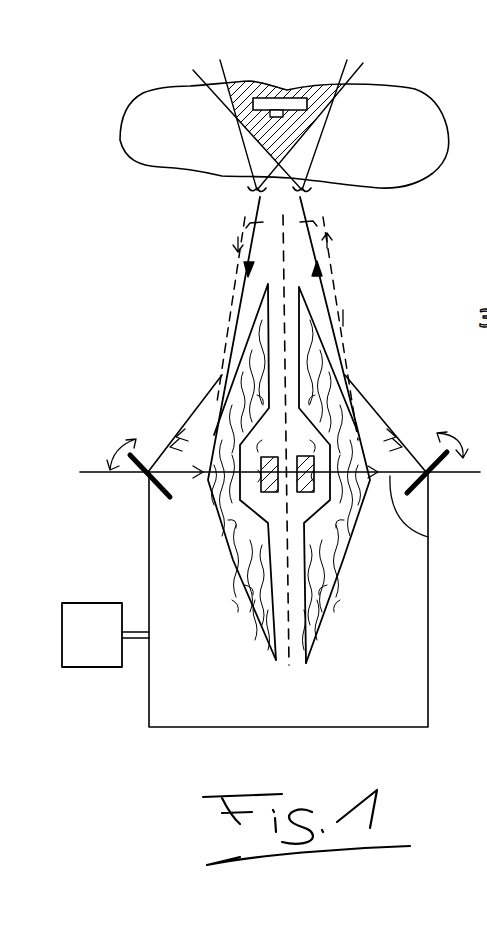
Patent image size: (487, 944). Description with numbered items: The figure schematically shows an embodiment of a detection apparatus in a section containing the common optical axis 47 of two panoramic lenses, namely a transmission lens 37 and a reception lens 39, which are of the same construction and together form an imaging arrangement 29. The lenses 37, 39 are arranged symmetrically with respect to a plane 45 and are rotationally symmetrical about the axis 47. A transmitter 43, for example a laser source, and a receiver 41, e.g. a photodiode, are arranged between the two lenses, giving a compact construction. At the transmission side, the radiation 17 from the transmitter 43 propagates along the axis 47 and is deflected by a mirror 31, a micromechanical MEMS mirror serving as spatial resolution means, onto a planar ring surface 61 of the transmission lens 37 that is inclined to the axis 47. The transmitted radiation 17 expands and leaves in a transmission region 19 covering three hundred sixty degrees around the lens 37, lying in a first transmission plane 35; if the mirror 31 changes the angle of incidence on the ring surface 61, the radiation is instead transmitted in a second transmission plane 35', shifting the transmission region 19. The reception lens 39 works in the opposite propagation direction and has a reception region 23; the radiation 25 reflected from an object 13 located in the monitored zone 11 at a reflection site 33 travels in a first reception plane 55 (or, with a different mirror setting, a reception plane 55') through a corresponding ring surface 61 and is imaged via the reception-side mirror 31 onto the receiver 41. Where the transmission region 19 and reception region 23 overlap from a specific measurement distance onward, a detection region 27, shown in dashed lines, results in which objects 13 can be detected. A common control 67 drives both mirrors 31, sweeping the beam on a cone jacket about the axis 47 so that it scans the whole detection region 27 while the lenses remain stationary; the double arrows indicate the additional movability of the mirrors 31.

The monitored zone 11 is at (413, 167).
The object 13 is at (282, 98).
The reflection site 33 is at (262, 118).
The detection region 27 is at (307, 120).
The reception region 23 is at (260, 163).
The transmission region 19 is at (306, 170).
The imaging arrangement 29 is at (177, 353).
The first reception plane 55 is at (197, 267).
The second reception plane 55' is at (185, 309).
The transmitted radiation 17 is at (330, 279).
The first transmission plane 35 is at (372, 328).
The second transmission plane 35' is at (400, 313).
The reflected radiation 25 is at (228, 343).
The axis of the imaging arrangement 47 is at (83, 478).
The spatial resolution means, mirror 31 is at (140, 477).
The receiver 41 is at (253, 513).
The transmitter 43 is at (313, 505).
The ring surface 61 is at (238, 575).
The reception lens 39 is at (258, 620).
The transmission lens 37 is at (320, 614).
The plane of symmetry 45 is at (289, 665).
The control 67 is at (84, 652).